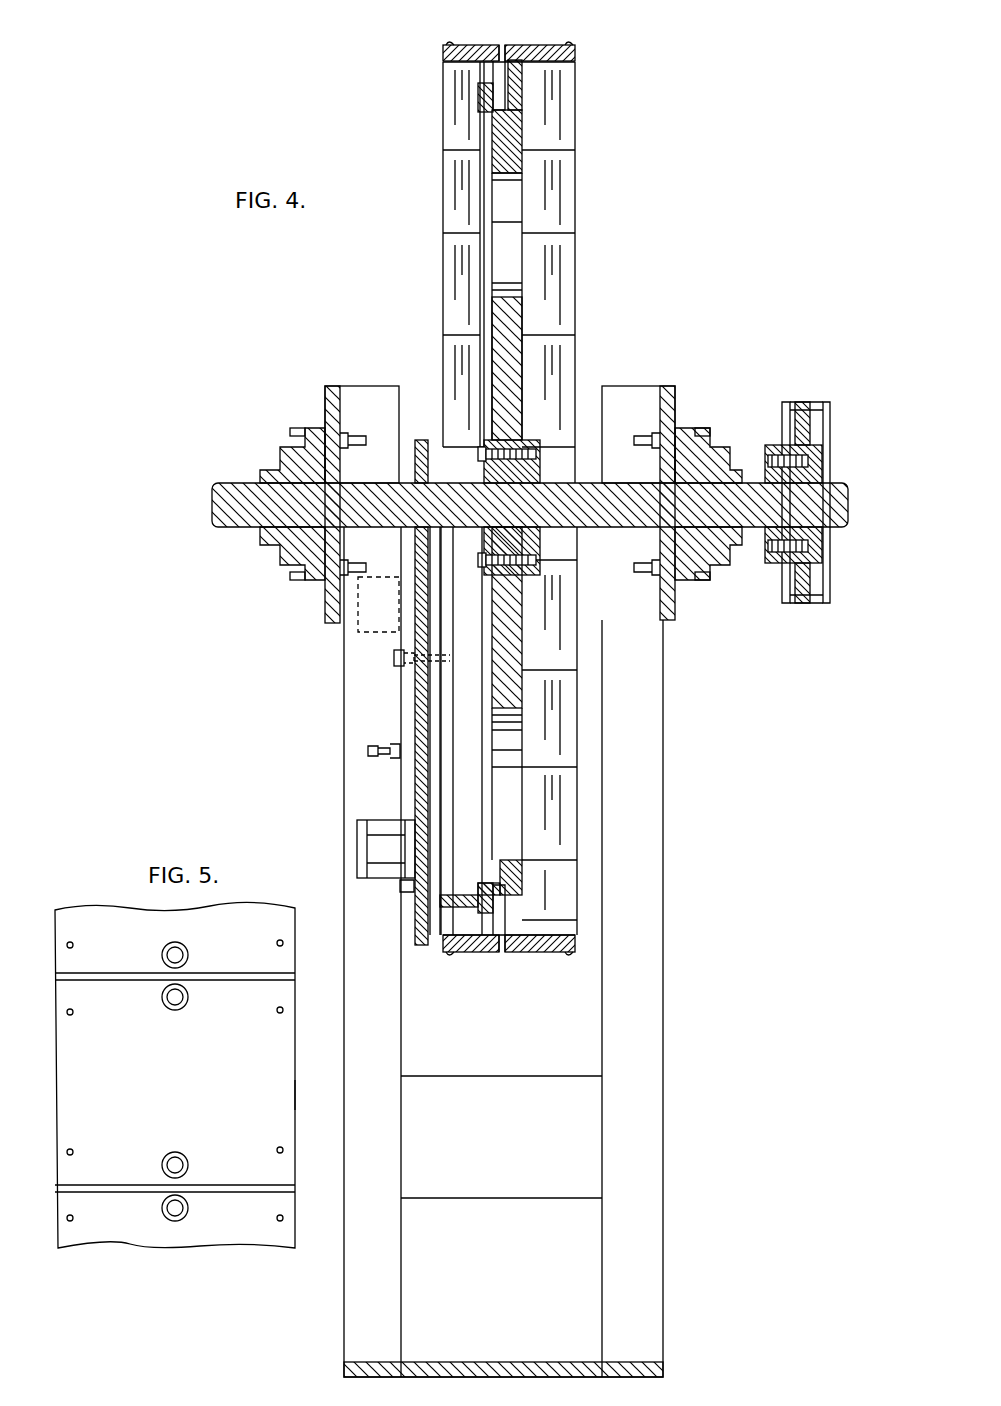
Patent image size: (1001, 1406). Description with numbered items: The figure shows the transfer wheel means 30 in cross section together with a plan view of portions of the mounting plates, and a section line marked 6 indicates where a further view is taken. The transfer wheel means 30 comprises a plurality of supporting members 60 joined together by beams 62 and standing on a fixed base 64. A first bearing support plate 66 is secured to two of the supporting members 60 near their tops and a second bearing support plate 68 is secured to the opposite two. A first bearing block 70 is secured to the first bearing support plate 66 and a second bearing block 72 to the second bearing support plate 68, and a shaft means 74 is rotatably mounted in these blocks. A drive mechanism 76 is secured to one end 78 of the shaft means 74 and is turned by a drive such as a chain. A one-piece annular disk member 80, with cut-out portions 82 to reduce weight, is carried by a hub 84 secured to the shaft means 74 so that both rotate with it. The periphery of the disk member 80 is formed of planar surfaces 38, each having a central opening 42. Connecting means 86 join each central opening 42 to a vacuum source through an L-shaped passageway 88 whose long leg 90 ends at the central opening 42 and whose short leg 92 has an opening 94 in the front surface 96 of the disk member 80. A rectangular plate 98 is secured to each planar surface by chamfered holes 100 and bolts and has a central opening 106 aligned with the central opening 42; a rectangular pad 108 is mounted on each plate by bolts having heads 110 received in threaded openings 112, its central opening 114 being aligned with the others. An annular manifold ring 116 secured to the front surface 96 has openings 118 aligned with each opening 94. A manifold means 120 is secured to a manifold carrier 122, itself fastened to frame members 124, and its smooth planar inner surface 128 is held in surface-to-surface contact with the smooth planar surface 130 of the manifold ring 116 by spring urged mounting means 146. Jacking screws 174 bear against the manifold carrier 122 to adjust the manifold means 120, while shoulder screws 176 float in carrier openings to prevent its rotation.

In FIG. 4, the transfer wheel means 30 is at (300, 726).
In FIG. 5, the planar surfaces 38 is at (108, 942).
In FIG. 4, the central opening 42 is at (525, 78).
In FIG. 4, the supporting members 60 is at (350, 1012).
In FIG. 4, the beams 62 is at (516, 1167).
In FIG. 4, the fixed base 64 is at (638, 1372).
In FIG. 4, the first bearing support plate 66 is at (325, 392).
In FIG. 4, the second bearing support plate 68 is at (668, 400).
In FIG. 4, the first bearing block 70 is at (290, 540).
In FIG. 4, the second bearing block 72 is at (718, 555).
In FIG. 4, the shaft means 74 is at (628, 530).
In FIG. 4, the drive mechanism 76 is at (805, 431).
In FIG. 4, the end of the shaft means 78 is at (846, 520).
In FIG. 4, the annular disk member 80 is at (530, 303).
In FIG. 4, the cut-out portions 82 is at (515, 228).
In FIG. 4, the hub 84 is at (545, 555).
In FIG. 4, the connecting means 86 is at (430, 112).
In FIG. 4, the L-shaped passageway 88 is at (540, 108).
In FIG. 4, the long leg 90 is at (492, 90).
In FIG. 4, the short leg 92 is at (520, 125).
In FIG. 4, the opening 94 is at (505, 120).
In FIG. 4, the front surface 96 is at (495, 190).
In FIG. 4, the rectangular plate 98 is at (487, 60).
In FIG. 5, the rectangular plate 98 is at (285, 1097).
In FIG. 5, the chamfered holes 100 is at (188, 997).
In FIG. 5, the central opening 106 is at (160, 1080).
In FIG. 4, the rectangular pad 108 is at (443, 53).
In FIG. 4, the bolt head 110 is at (448, 43).
In FIG. 5, the threaded openings 112 is at (66, 1010).
In FIG. 4, the central opening 114 is at (502, 62).
In FIG. 4, the annular manifold ring 116 is at (490, 100).
In FIG. 4, the openings 118 is at (495, 110).
In FIG. 4, the manifold means 120 is at (465, 720).
In FIG. 4, the manifold carrier 122 is at (420, 896).
In FIG. 4, the frame members 124 is at (410, 768).
In FIG. 4, the inner surface 128 is at (490, 905).
In FIG. 4, the smooth planar surface 130 is at (512, 130).
In FIG. 4, the spring urged mounting means 146 is at (365, 848).
In FIG. 4, the jacking screws 174 is at (368, 752).
In FIG. 4, the shoulder screws 176 is at (394, 658).
In FIG. 4, the section line 6- 6 is at (853, 393).